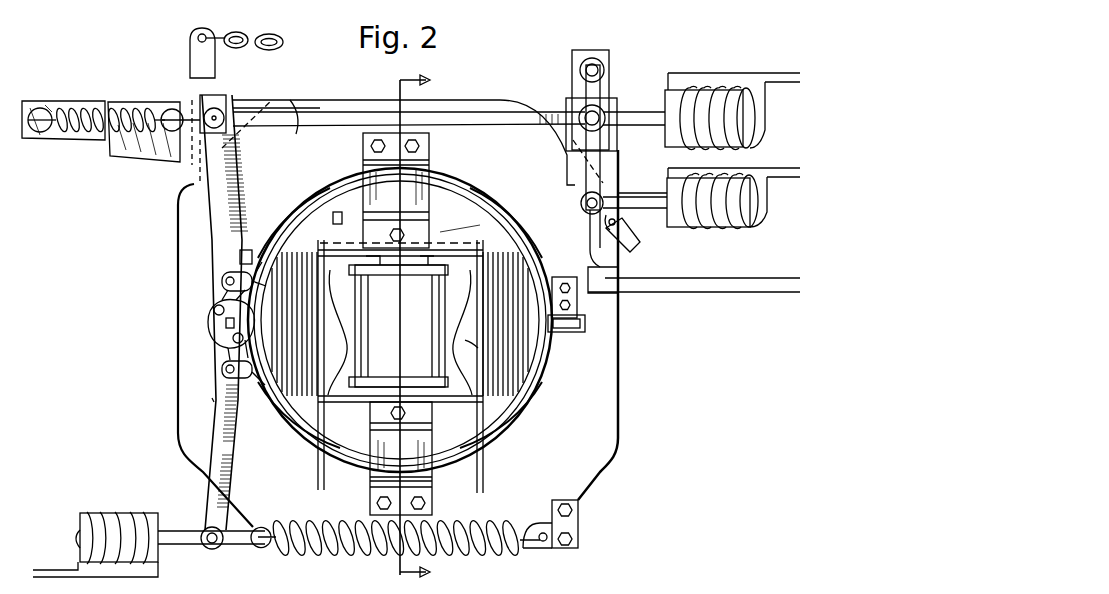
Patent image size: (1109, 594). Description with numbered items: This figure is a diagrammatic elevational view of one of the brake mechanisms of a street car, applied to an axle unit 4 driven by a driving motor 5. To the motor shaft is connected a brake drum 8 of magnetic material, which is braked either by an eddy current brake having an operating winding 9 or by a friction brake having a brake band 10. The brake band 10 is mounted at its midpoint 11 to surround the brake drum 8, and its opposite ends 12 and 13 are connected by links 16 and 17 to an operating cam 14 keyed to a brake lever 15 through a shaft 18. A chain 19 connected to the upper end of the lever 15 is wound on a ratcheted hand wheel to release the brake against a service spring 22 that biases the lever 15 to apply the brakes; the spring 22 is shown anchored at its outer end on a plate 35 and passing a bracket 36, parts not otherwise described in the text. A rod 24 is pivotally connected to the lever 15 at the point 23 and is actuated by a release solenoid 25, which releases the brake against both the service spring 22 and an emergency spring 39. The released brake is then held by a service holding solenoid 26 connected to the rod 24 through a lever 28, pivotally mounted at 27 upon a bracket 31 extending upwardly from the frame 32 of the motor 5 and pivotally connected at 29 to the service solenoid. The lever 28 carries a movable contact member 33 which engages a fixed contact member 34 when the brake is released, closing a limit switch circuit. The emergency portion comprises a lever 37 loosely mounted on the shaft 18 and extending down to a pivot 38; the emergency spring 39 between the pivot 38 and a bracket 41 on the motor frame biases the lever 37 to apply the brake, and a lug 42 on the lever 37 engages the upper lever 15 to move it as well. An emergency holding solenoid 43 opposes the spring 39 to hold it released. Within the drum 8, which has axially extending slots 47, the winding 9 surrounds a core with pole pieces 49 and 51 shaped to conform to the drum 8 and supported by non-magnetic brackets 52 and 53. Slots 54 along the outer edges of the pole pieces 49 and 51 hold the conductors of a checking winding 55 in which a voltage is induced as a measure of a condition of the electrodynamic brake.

The axle unit 4 is at (424, 327).
The driving motor 5 is at (177, 418).
The brake drum 8 is at (523, 382).
The operating winding 9 is at (354, 298).
The brake band 10 is at (548, 378).
The midpoint 11 is at (586, 326).
The end of brake band 12 is at (222, 259).
The end of brake band 13 is at (222, 380).
The operating cam 14 is at (208, 312).
The brake lever 15 is at (190, 64).
The link 16 is at (228, 283).
The link 17 is at (222, 352).
The shaft 18 is at (226, 325).
The chain 19 is at (247, 48).
The service spring 22 is at (100, 108).
The pivot point 23 is at (223, 112).
The rod 24 is at (322, 112).
The release solenoid 25 is at (710, 90).
The service holding solenoid 26 is at (712, 228).
The pivot 27 is at (606, 66).
The lever 28 is at (600, 165).
The pivotal connection 29 is at (580, 204).
The bracket 31 is at (607, 86).
The motor frame 32 is at (500, 104).
The movable contact member 33 is at (592, 275).
The fixed contact member 34 is at (628, 256).
The spring anchor plate 35 is at (42, 108).
The bracket 36 is at (150, 162).
The emergency lever 37 is at (212, 398).
The pivot 38 is at (220, 548).
The emergency spring 39 is at (305, 550).
The bracket 41 is at (560, 548).
The lug 42 is at (246, 248).
The emergency holding solenoid 43 is at (112, 513).
The axially extending slots 47 is at (350, 195).
The pole piece 49 is at (450, 222).
The pole piece 51 is at (440, 462).
The supporting bracket 52 is at (432, 175).
The supporting bracket 53 is at (370, 487).
The slots 54 is at (400, 332).
The checking winding 55 is at (468, 346).